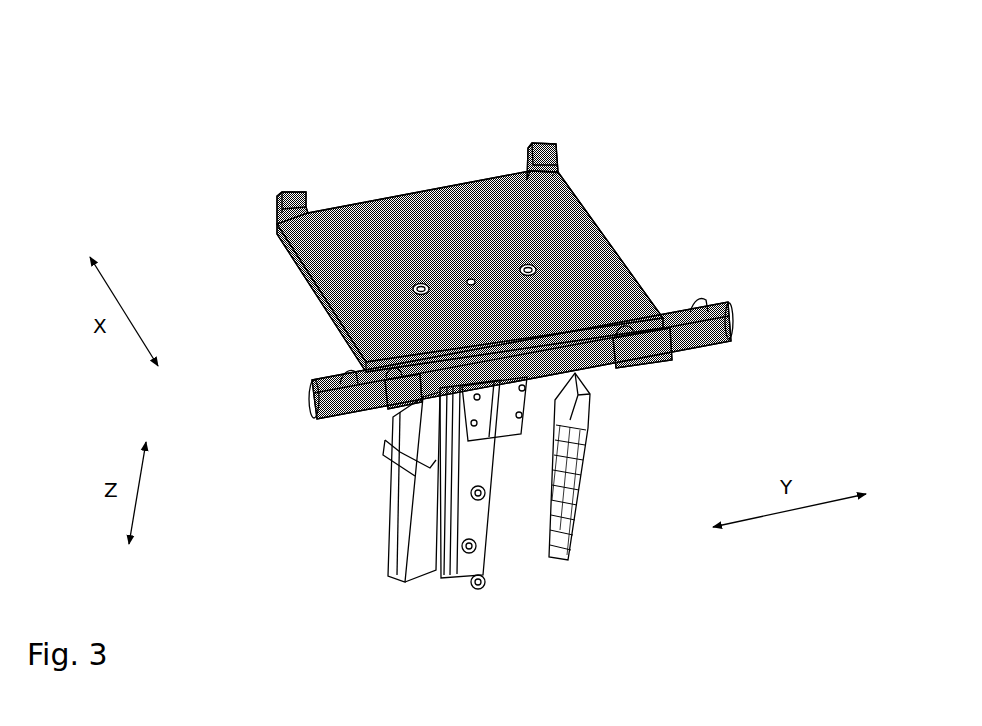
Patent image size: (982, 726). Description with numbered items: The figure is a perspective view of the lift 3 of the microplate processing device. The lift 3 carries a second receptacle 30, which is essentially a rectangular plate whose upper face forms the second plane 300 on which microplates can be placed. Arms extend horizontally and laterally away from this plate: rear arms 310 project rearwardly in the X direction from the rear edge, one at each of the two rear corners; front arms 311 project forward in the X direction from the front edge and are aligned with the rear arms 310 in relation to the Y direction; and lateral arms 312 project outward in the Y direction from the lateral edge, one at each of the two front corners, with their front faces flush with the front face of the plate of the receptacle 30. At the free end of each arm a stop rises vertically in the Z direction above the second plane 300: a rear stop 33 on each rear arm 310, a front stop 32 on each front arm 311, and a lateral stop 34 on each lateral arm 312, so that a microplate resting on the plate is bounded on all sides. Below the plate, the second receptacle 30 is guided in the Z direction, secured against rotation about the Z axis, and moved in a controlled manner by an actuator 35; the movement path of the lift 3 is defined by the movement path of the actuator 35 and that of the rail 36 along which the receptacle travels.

The lift 3 is at (782, 117).
The second receptacle 30 is at (736, 212).
The second plane 300 is at (582, 230).
The rear stop 33 is at (292, 196).
The rear arm 310 is at (276, 222).
The lateral arm 312 is at (700, 311).
The lateral stop 34 is at (729, 297).
The front stop 32 is at (675, 355).
The front arm 311 is at (613, 350).
The actuator 35 is at (380, 500).
The rail 36 is at (477, 520).